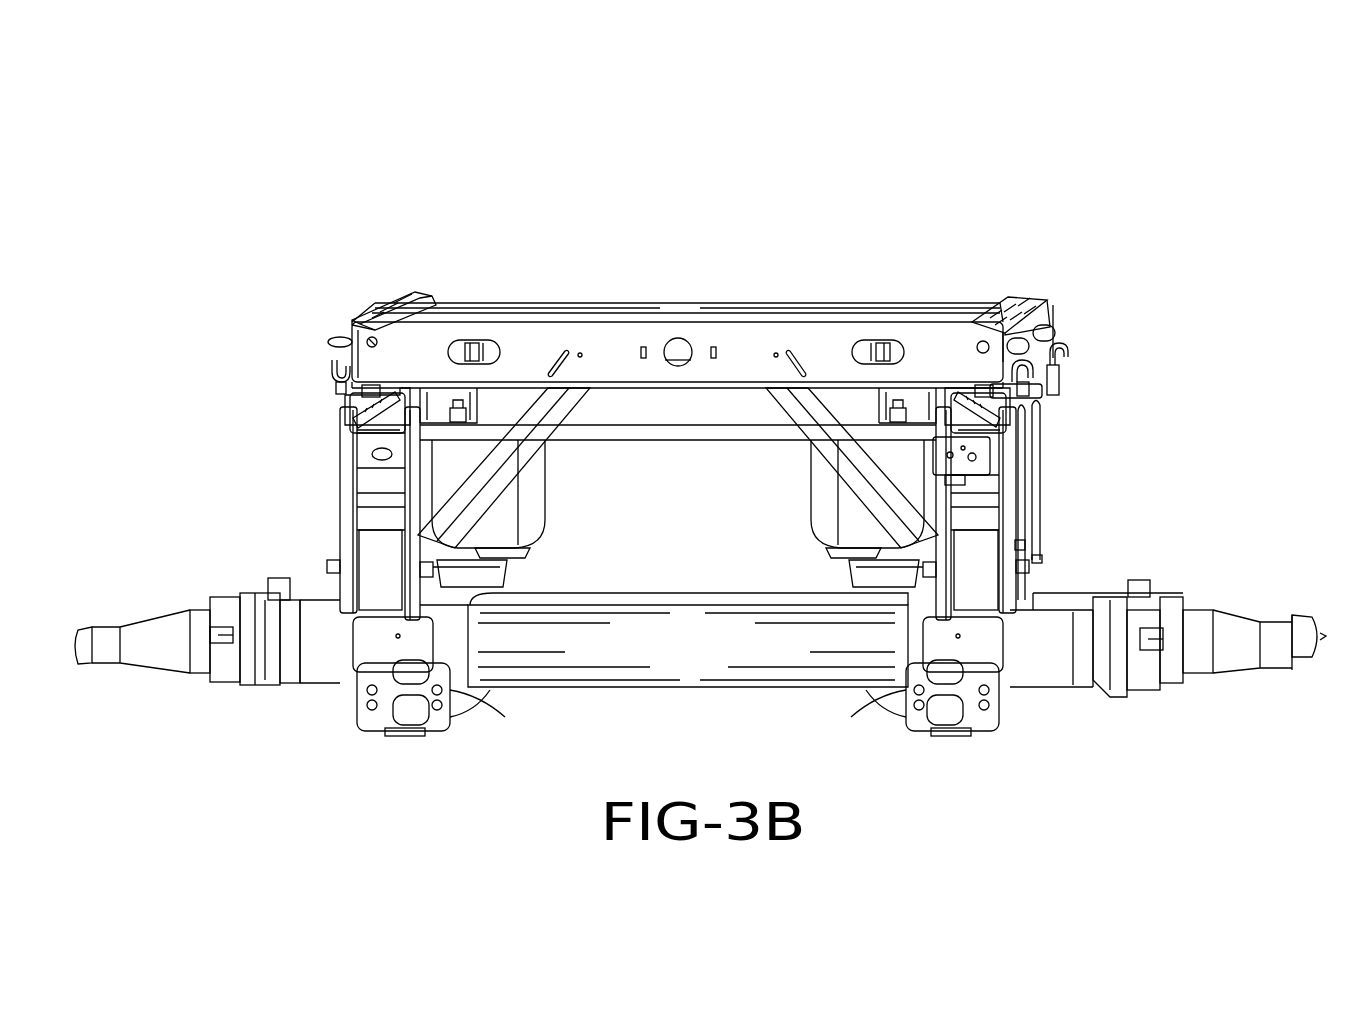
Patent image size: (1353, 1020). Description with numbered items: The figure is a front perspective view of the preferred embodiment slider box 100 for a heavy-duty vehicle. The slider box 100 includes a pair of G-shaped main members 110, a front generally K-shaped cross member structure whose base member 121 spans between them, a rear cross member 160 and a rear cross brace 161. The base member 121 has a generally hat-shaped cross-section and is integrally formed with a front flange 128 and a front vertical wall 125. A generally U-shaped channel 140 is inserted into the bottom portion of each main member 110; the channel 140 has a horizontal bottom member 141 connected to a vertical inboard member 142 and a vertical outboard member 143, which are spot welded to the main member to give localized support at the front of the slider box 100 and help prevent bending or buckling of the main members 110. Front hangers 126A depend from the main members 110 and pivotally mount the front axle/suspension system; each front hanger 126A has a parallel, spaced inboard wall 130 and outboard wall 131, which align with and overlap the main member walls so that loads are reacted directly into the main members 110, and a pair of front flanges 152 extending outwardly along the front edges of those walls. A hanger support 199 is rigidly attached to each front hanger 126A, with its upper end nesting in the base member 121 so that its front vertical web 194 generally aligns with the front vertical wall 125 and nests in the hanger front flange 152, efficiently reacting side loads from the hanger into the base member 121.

The slider box 100 is at (486, 136).
The main member 110 is at (372, 298).
The base member 121 is at (735, 316).
The front vertical wall 125 is at (610, 358).
The front flange 128 is at (690, 385).
The inboard wall 130 is at (462, 530).
The outboard wall 131 is at (340, 506).
The U-shaped channel 140 is at (352, 423).
The horizontal bottom member 141 is at (390, 420).
The vertical inboard member 142 is at (990, 395).
The vertical outboard member 143 is at (365, 408).
The front flange 152 is at (413, 590).
The rear cross member 160 is at (568, 316).
The rear cross brace 161 is at (845, 310).
The front vertical web 194 is at (500, 442).
The hanger support 199 is at (500, 486).
The front hanger 126A is at (353, 617).